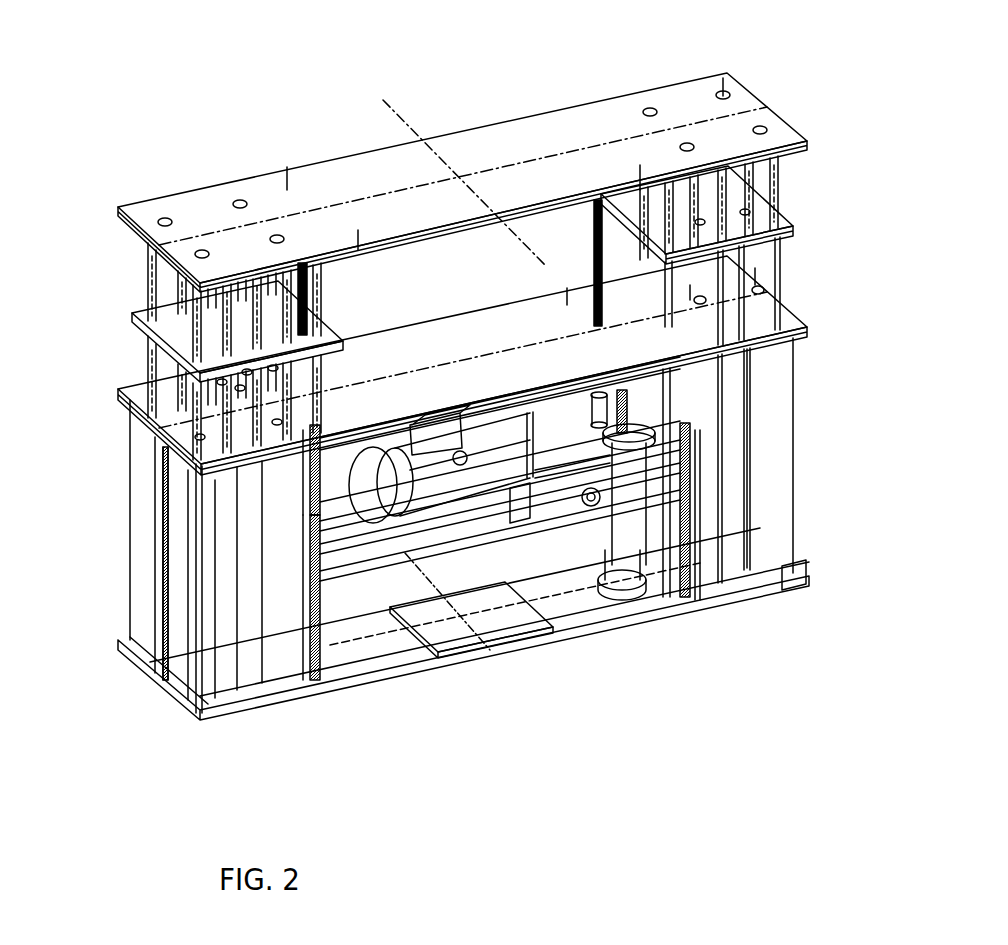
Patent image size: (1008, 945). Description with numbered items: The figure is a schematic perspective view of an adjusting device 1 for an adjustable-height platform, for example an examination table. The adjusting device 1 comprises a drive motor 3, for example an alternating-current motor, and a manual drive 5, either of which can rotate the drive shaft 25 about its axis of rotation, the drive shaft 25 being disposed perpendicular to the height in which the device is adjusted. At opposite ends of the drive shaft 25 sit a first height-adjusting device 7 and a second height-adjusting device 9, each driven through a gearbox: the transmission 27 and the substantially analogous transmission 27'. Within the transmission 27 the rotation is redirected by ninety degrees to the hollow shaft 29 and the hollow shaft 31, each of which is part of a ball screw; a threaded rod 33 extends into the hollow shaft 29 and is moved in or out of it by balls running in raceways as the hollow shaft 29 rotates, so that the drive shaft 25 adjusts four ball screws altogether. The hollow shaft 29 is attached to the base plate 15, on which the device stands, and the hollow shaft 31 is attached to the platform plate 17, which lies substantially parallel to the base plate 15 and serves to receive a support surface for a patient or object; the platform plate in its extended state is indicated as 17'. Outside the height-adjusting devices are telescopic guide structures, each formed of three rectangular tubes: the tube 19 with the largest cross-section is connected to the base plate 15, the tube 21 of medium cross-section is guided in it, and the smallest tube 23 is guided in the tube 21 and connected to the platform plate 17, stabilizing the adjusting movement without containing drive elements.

The adjusting device 1 is at (520, 84).
The drive motor 3 is at (463, 438).
The manual drive 5 is at (623, 513).
The height-adjusting device 7 is at (793, 320).
The second height-adjusting device 9 is at (310, 486).
The base plate 15 is at (555, 620).
The platform plate 17 is at (774, 291).
The platform plate in extended state 17' is at (478, 181).
The tube 19 is at (773, 493).
The tube 21 is at (745, 268).
The tube 23 is at (753, 197).
The drive shaft 25 is at (525, 400).
The transmission 27 is at (764, 467).
The transmission 27' is at (193, 597).
The hollow shaft 29 is at (643, 555).
The hollow shaft 31 is at (680, 405).
The threaded rod 33 is at (720, 370).